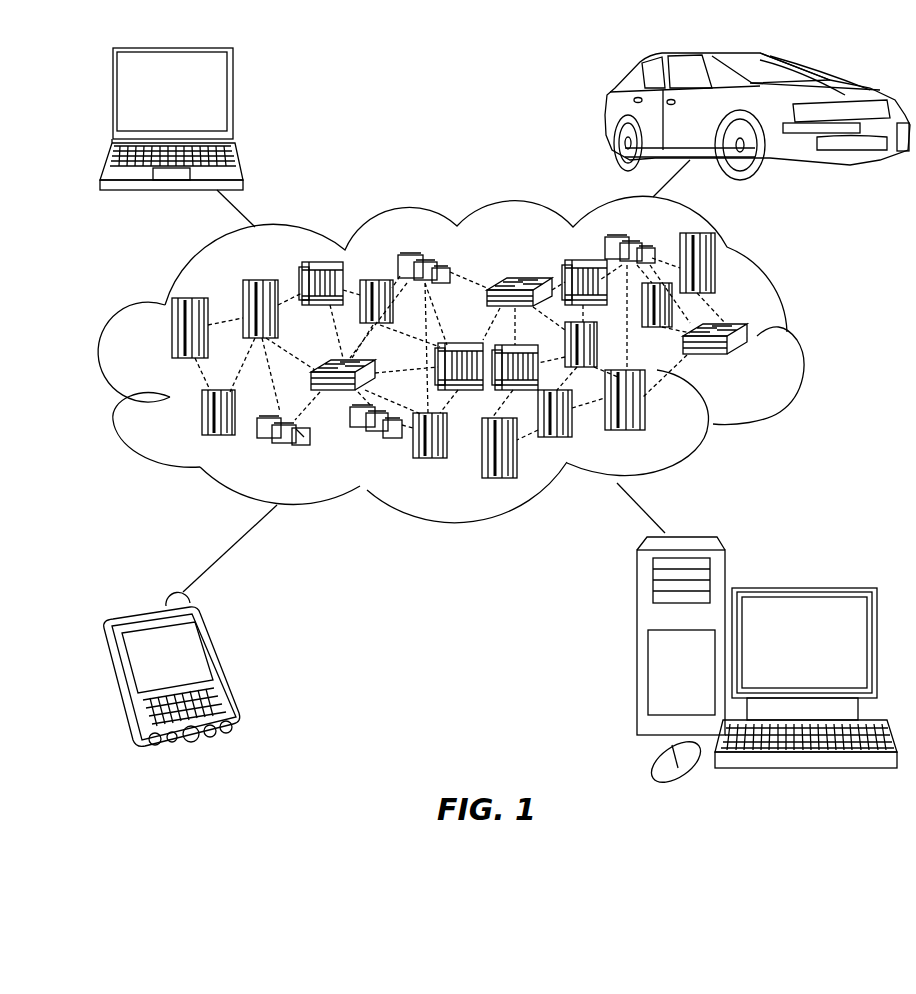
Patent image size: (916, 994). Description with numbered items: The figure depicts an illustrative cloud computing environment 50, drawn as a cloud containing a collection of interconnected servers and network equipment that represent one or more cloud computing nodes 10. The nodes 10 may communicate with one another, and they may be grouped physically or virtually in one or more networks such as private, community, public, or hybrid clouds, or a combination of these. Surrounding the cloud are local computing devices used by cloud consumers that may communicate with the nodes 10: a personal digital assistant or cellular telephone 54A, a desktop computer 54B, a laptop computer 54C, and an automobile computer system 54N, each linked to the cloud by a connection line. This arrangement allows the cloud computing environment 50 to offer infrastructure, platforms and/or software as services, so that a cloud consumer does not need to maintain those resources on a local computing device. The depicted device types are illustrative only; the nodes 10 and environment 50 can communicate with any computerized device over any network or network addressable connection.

The cloud computing node 10 is at (749, 362).
The cloud computing environment 50 is at (800, 338).
The personal digital assistant or cellular telephone 54A is at (222, 670).
The desktop computer 54B is at (802, 588).
The laptop computer 54C is at (232, 101).
The automobile computer system 54N is at (610, 108).